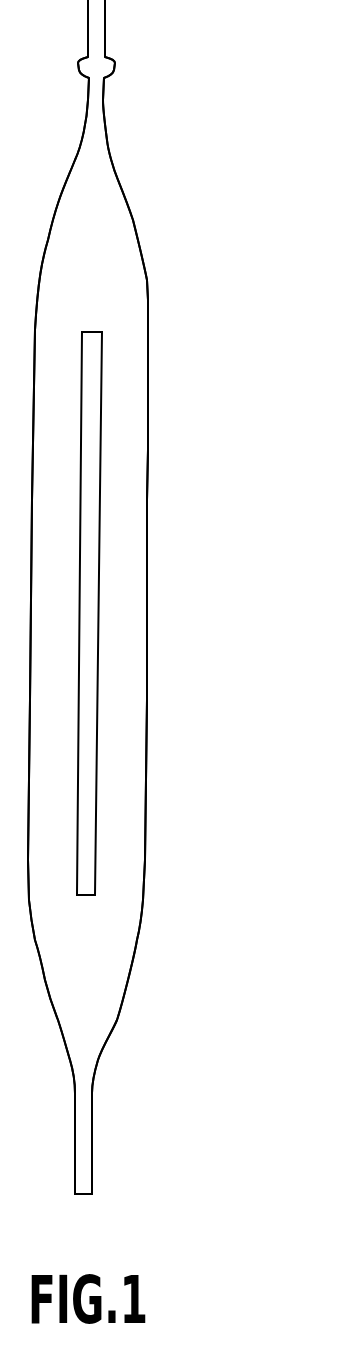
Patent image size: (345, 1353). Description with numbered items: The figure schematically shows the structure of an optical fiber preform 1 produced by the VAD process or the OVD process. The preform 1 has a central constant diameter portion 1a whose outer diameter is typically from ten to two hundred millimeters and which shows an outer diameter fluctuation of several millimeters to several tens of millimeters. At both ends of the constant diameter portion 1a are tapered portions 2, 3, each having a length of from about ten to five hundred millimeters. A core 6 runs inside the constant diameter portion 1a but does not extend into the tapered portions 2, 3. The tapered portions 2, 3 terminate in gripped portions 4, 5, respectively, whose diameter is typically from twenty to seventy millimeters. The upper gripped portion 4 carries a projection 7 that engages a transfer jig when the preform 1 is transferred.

The preform 1 is at (150, 560).
The constant diameter portion 1a is at (125, 378).
The tapered portion 2 is at (102, 205).
The tapered portion 3 is at (83, 968).
The gripped portion 4 is at (97, 30).
The gripped portion 5 is at (80, 1147).
The core 6 is at (87, 647).
The projection 7 is at (105, 62).